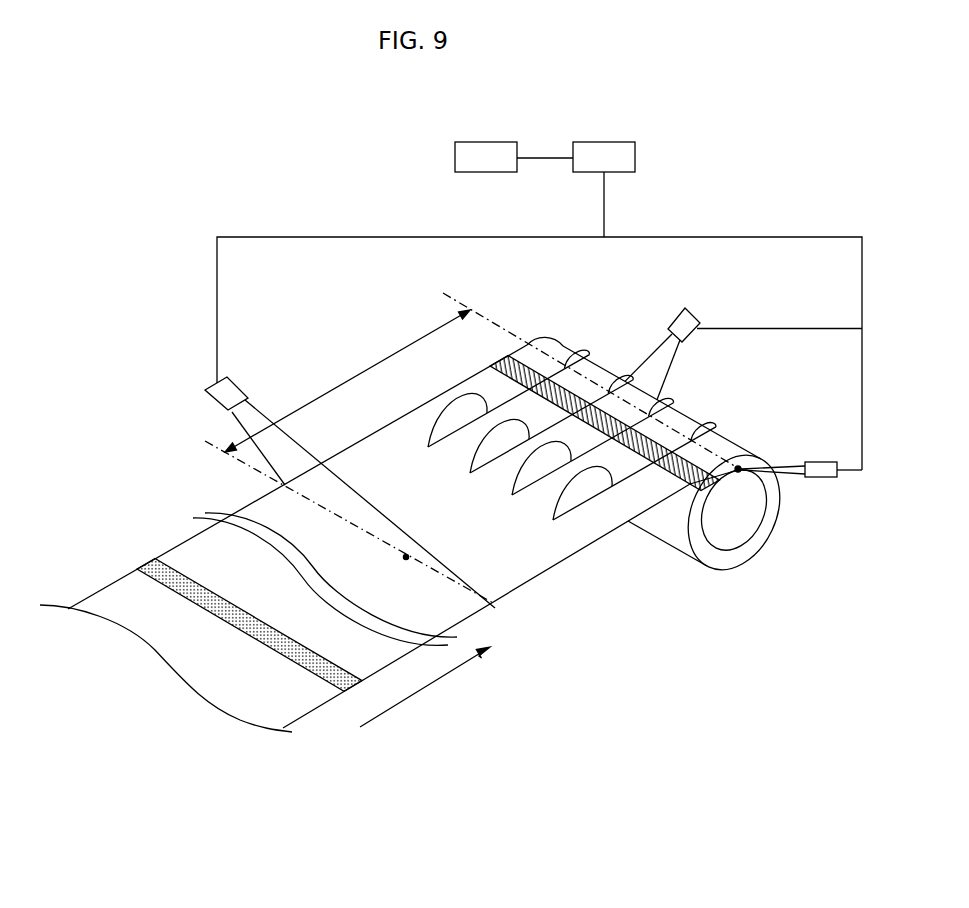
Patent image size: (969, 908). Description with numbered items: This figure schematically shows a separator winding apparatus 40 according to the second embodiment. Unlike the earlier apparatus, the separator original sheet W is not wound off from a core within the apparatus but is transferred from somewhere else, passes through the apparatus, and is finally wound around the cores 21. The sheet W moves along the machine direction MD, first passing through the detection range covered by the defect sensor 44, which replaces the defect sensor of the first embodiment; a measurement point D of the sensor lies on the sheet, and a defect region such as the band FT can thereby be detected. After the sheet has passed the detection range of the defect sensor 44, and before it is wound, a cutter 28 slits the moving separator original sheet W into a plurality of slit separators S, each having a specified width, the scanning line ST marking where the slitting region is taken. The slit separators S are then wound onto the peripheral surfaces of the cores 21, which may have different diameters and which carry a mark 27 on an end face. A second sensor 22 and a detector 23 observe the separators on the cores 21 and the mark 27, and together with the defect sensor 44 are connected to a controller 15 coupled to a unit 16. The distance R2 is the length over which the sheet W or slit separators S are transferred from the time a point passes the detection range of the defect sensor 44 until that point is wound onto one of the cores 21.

The controller 15 is at (605, 141).
The storage / display unit 16 is at (488, 141).
The core 21 is at (733, 556).
The second sensor (surface detector) 22 is at (693, 312).
The rotation detector 23 is at (820, 461).
The mark 27 is at (741, 476).
The cutter 28 is at (466, 414).
The separator winding apparatus 40 is at (64, 202).
The defect sensor 44 is at (212, 382).
The separator original sheet W is at (512, 560).
The defect band on web FT is at (138, 556).
The machine direction MD is at (432, 686).
The distance R2 is at (303, 405).
The measurement point D is at (407, 551).
The slit separator S is at (670, 402).
The scanning start line ST is at (489, 352).